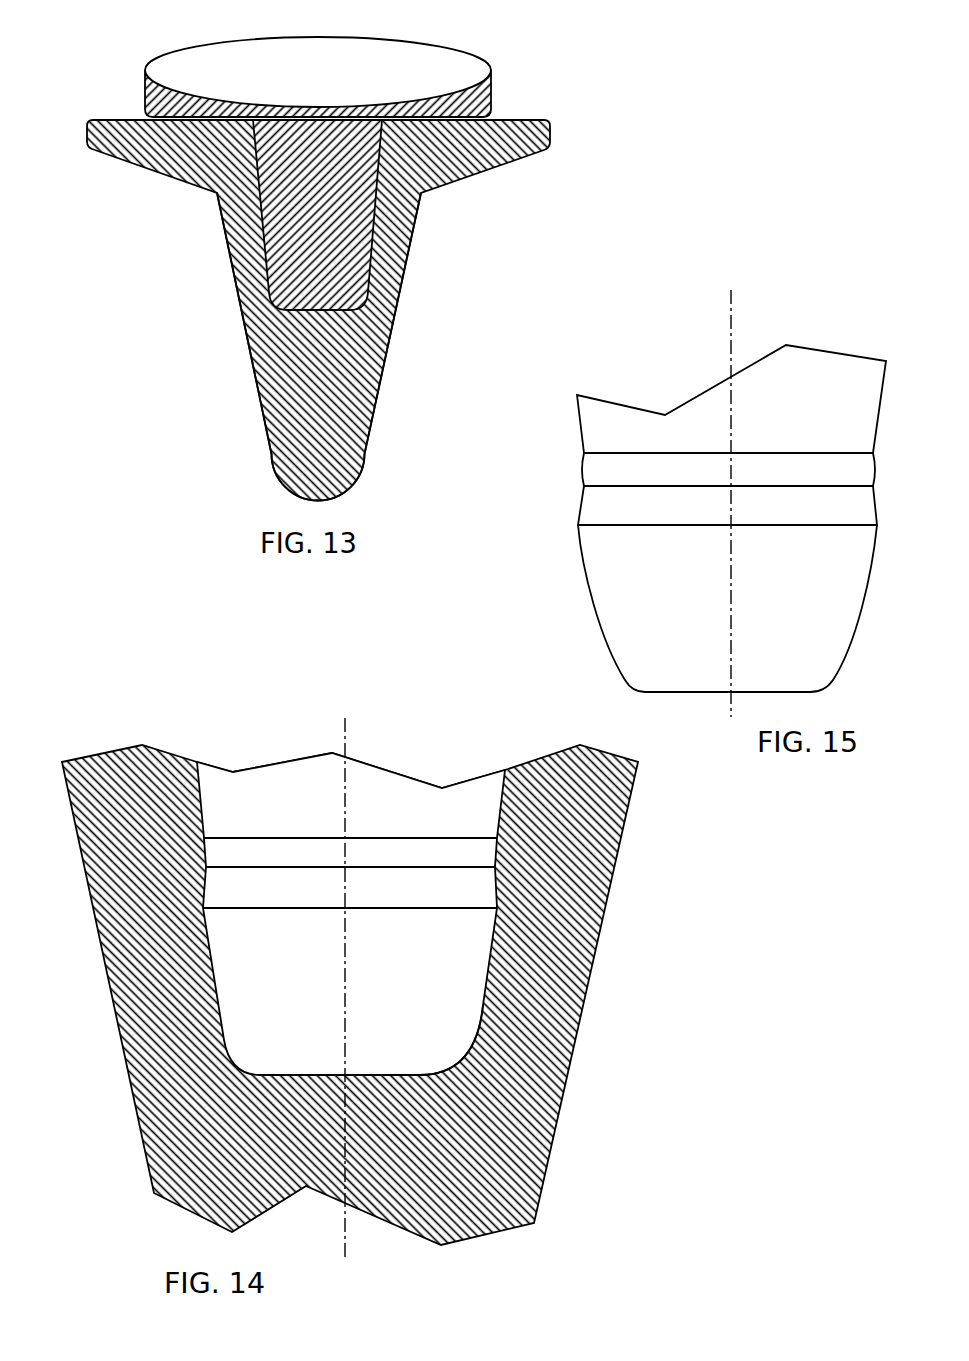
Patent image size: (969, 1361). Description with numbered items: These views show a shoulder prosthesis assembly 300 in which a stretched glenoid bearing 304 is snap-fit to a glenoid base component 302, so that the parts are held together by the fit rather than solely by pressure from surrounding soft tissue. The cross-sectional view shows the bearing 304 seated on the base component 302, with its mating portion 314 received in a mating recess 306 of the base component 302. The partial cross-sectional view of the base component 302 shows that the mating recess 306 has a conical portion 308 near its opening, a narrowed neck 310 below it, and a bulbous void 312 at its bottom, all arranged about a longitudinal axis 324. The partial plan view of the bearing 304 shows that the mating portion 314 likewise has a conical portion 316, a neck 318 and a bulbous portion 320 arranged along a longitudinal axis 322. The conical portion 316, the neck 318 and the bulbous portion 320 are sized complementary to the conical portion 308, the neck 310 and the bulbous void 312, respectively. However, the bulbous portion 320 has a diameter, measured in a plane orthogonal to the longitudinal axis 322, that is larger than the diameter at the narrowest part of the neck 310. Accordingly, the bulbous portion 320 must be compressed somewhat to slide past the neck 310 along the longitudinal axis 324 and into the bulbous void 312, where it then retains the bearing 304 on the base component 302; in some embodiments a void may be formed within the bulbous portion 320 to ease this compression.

In FIG. 13, the shoulder prosthesis assembly 300 is at (312, 257).
In FIG. 13, the glenoid base component 302 is at (447, 188).
In FIG. 13, the stretched glenoid bearing 304 is at (492, 92).
In FIG. 13, the mating recess 306 is at (380, 395).
In FIG. 14, the mating recess 306 is at (588, 987).
In FIG. 14, the conical portion 308 is at (200, 793).
In FIG. 14, the neck 310 is at (206, 862).
In FIG. 14, the bulbous void 312 is at (482, 1008).
In FIG. 13, the mating portion 314 is at (227, 205).
In FIG. 15, the conical portion 316 is at (578, 422).
In FIG. 15, the neck 318 is at (577, 480).
In FIG. 15, the bulbous portion 320 is at (578, 542).
In FIG. 15, the longitudinal axis 322 is at (732, 315).
In FIG. 14, the longitudinal axis 324 is at (348, 740).